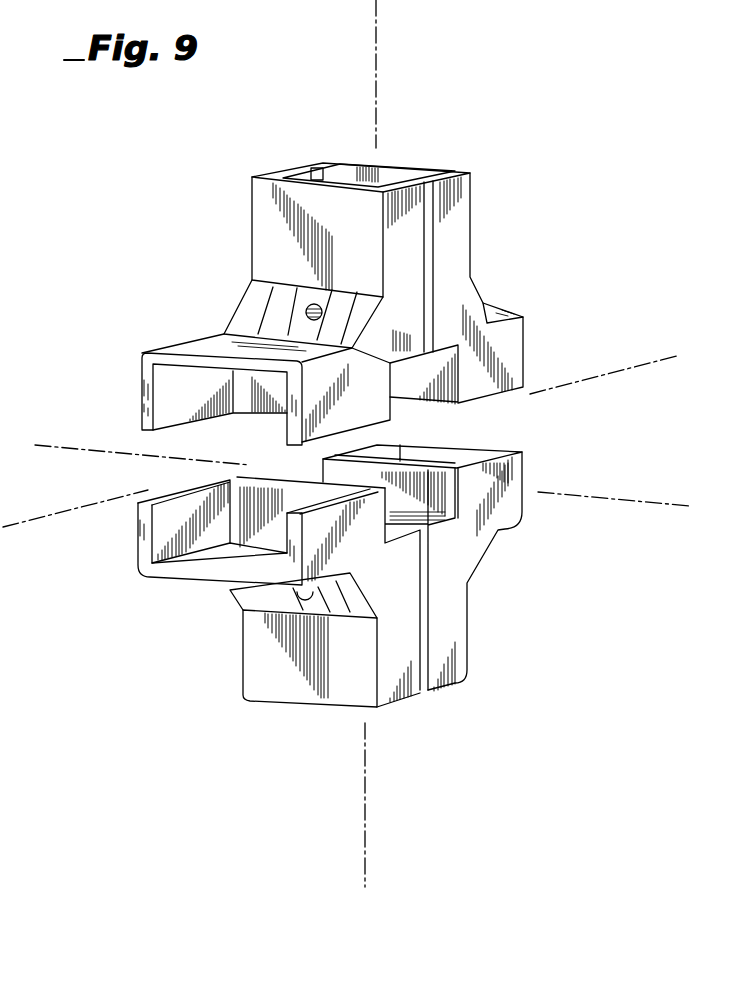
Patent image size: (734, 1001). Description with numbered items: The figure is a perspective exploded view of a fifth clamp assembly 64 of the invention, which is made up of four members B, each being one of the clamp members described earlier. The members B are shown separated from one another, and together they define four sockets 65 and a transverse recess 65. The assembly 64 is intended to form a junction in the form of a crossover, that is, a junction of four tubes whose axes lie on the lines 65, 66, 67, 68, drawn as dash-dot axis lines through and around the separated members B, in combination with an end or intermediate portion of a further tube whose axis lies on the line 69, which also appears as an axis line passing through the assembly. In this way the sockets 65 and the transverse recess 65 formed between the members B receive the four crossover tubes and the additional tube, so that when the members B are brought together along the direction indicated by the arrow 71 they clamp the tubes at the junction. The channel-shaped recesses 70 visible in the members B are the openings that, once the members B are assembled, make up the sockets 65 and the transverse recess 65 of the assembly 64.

The fifth clamp assembly 64 is at (238, 158).
The socket 65 is at (376, 18).
The line 66 is at (642, 365).
The line 67 is at (364, 807).
The line 68 is at (35, 521).
The line 69 is at (65, 447).
The receiving channels / recesses 70 is at (384, 183).
The arrow indicating joining direction 71 is at (441, 446).
The member B is at (478, 211).